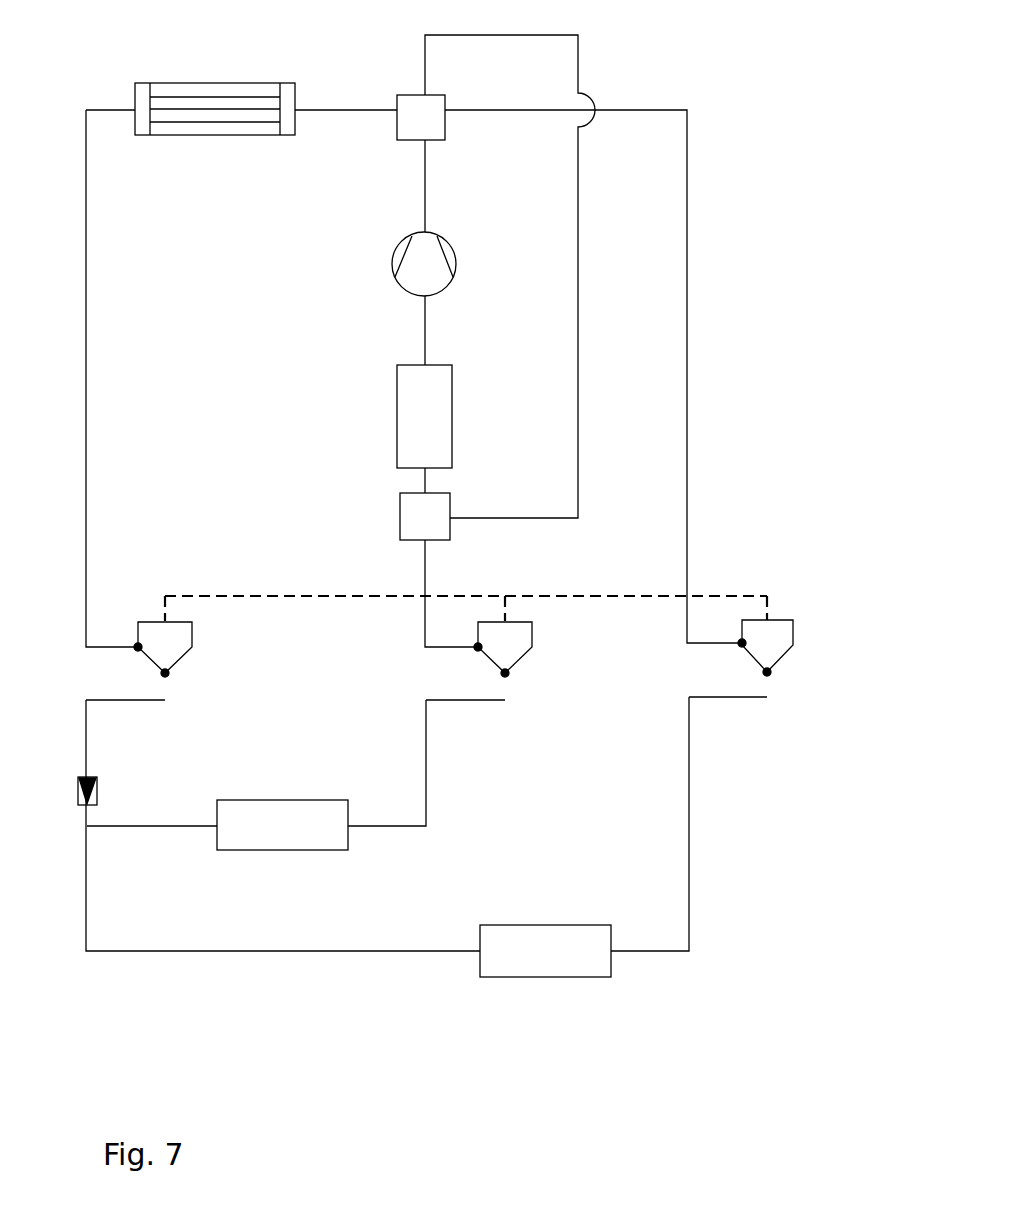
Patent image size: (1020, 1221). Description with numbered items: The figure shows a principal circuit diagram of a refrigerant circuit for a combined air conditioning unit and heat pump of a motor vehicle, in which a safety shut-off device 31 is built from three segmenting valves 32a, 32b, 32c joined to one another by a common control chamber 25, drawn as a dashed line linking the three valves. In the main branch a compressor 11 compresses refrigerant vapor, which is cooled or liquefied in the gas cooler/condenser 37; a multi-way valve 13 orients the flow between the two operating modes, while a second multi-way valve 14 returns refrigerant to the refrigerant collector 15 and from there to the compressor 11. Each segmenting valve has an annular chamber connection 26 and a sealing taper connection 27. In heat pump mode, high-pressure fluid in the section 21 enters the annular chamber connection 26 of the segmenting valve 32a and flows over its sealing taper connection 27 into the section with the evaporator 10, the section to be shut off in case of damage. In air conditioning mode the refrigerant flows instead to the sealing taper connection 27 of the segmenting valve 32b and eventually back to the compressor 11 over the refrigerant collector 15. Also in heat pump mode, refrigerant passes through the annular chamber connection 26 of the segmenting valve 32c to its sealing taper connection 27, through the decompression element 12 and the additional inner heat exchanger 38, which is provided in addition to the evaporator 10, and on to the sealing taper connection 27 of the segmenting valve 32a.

The evaporator 10 is at (297, 835).
The compressor 11 is at (463, 264).
The decompression element 12 is at (101, 787).
The multi-way valve 13 is at (437, 125).
The multi-way valve 14 is at (425, 518).
The refrigerant collector 15 is at (425, 401).
The section 21 is at (86, 290).
The control chamber 25 is at (310, 597).
The annular chamber connection 26 is at (690, 670).
The sealing taper connection 27 is at (843, 698).
The safety shut-off device 31 is at (727, 555).
The segmenting valve 32a is at (175, 637).
The segmenting valve 32b is at (515, 637).
The segmenting valve 32c is at (778, 633).
The gas cooler/condenser 37 is at (214, 134).
The additional inner heat exchanger 38 is at (533, 940).